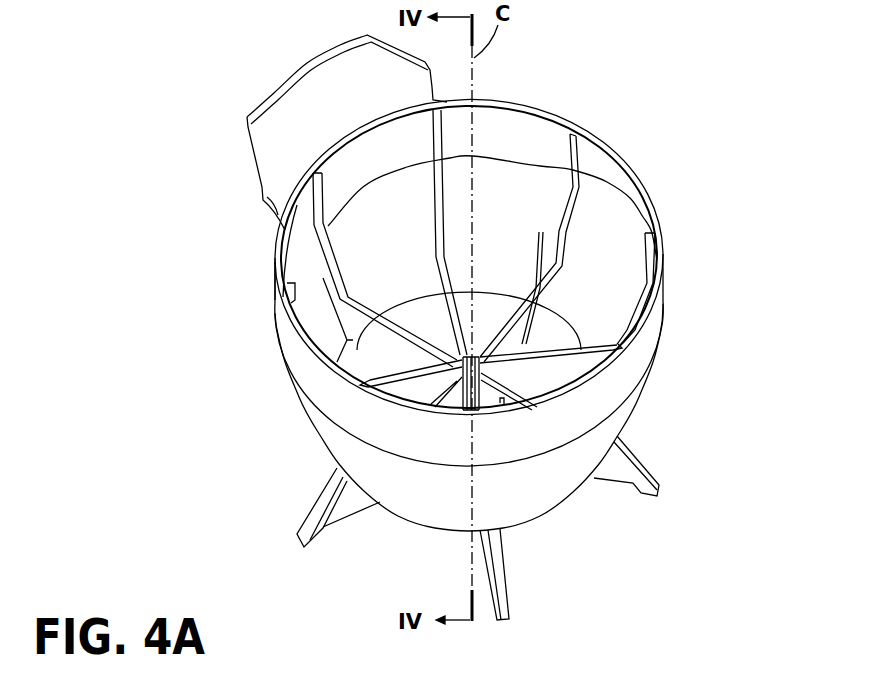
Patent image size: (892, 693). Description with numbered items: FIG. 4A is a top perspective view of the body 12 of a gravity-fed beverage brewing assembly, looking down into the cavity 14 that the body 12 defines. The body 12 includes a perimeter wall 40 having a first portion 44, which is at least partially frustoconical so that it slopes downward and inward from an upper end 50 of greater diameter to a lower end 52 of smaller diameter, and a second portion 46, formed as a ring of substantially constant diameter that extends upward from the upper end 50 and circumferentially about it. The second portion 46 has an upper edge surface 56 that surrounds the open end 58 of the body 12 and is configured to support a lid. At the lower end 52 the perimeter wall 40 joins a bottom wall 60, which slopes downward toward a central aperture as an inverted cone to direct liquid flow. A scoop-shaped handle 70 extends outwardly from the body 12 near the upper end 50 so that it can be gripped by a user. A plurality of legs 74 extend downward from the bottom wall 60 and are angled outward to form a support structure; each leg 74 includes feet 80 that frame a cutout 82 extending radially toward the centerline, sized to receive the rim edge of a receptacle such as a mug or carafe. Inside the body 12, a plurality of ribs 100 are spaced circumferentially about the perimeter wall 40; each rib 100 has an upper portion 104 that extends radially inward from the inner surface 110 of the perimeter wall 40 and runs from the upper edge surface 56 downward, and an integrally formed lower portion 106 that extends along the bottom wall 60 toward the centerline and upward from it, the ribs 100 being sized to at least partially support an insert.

The body 12 is at (668, 130).
The cavity 14 is at (368, 242).
The perimeter wall 40 is at (603, 430).
The first portion 44 is at (347, 446).
The second portion 46 is at (278, 313).
The upper end 50 is at (650, 373).
The lower end 52 is at (570, 497).
The upper edge surface 56 is at (282, 268).
The open end 58 is at (543, 115).
The bottom wall 60 is at (335, 360).
The handle 70 is at (300, 120).
The legs 74 is at (347, 498).
The feet 80 is at (310, 537).
The cutout 82 is at (352, 525).
The ribs 100 is at (655, 240).
The upper portion 104 is at (583, 173).
The lower portion 106 is at (545, 123).
The inner surface 110 is at (502, 192).